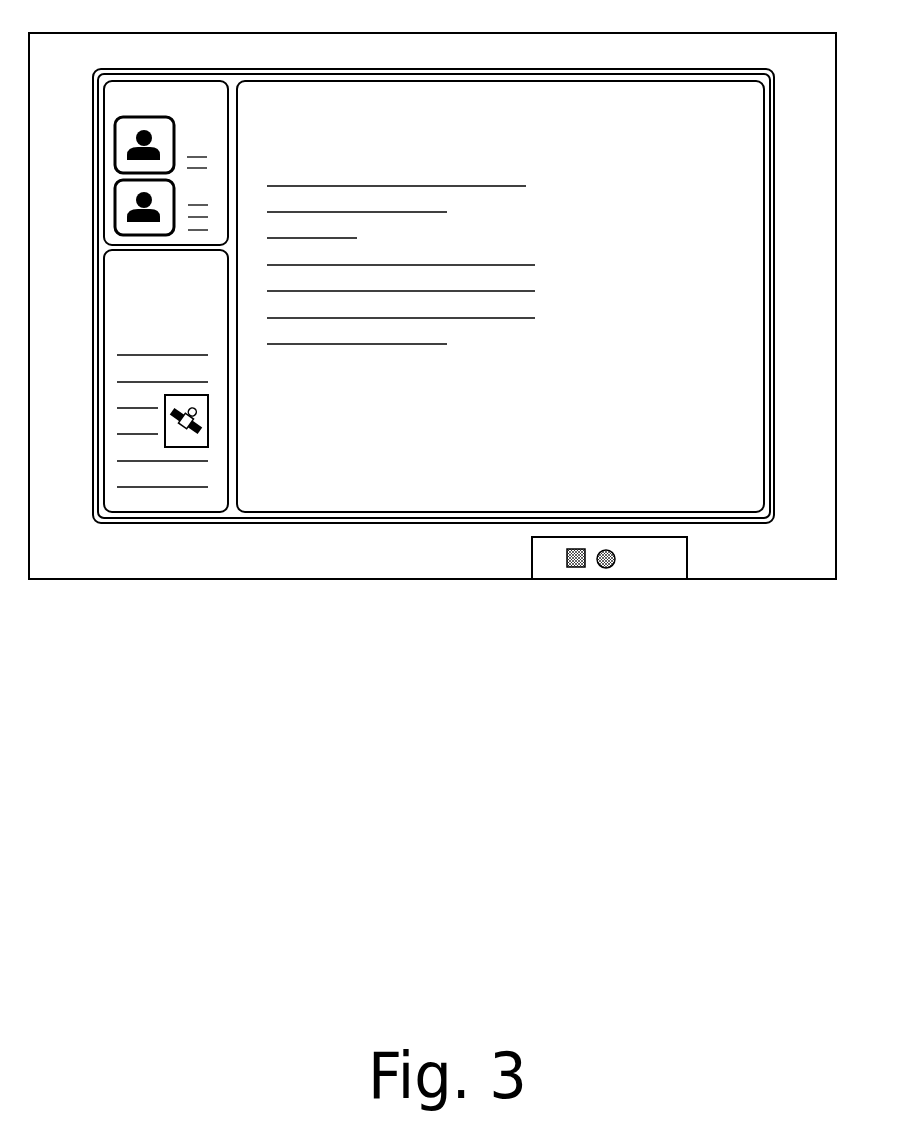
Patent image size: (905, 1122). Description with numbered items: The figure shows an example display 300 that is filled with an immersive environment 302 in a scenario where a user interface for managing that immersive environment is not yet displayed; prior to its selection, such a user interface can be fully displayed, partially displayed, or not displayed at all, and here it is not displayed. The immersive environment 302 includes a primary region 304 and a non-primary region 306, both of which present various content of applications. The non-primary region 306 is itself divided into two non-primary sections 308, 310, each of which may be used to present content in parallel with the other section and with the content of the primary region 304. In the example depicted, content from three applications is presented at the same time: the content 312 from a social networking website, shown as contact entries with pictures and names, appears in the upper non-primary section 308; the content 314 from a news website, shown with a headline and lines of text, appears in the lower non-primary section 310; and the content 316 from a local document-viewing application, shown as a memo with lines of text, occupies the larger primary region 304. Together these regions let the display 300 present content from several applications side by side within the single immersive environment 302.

The display 300 is at (437, 33).
The immersive environment 302 is at (224, 68).
The primary region 304 is at (753, 108).
The non-primary region 306 is at (229, 526).
The non-primary section 308 is at (222, 106).
The non-primary section 310 is at (222, 276).
The content from a social networking website 312 is at (108, 115).
The content from a news website 314 is at (108, 287).
The content from a local document-viewing application 316 is at (320, 116).